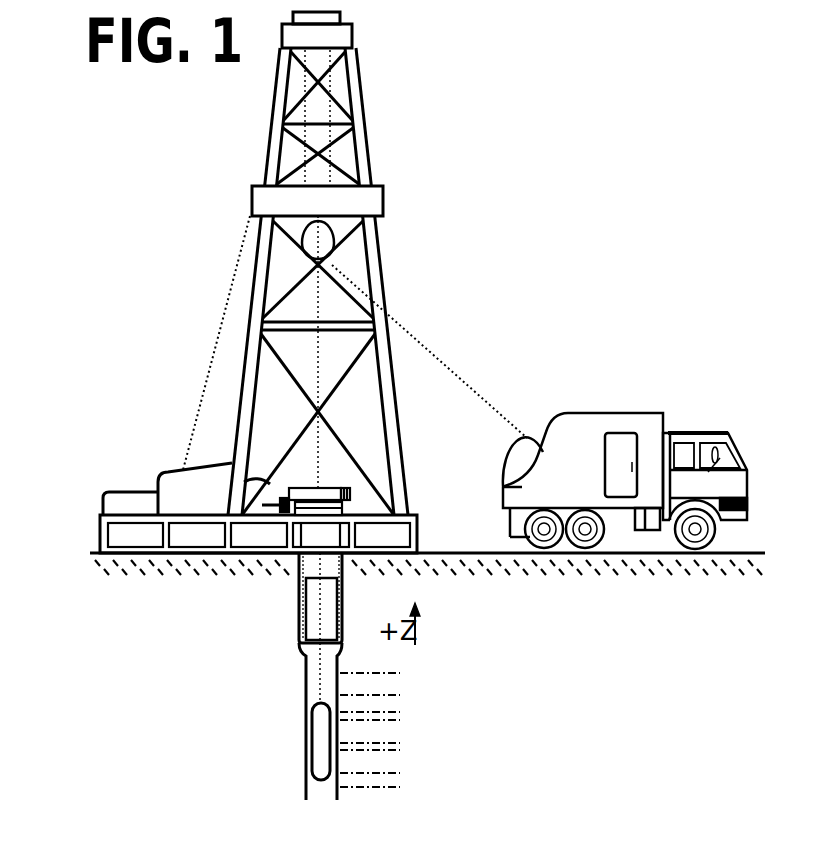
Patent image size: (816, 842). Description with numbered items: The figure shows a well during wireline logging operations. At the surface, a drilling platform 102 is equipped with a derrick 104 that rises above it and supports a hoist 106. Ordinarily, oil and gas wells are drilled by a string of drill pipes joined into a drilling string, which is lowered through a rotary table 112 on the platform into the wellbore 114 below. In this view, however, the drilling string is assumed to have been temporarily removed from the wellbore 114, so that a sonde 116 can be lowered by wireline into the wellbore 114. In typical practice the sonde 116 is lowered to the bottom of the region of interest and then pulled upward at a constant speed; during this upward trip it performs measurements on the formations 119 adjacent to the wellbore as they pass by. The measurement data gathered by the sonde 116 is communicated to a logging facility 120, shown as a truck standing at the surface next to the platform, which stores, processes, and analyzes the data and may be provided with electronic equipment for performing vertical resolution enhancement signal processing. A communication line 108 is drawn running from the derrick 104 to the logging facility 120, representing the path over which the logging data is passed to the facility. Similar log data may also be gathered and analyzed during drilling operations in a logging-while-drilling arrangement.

The drilling platform 102 is at (418, 528).
The derrick 104 is at (403, 473).
The hoist 106 is at (333, 236).
The communication line 108 is at (405, 325).
The rotary table 112 is at (340, 483).
The wellbore 114 is at (305, 656).
The sonde 116 is at (312, 730).
The formations 119 is at (405, 670).
The logging facility 120 is at (580, 413).